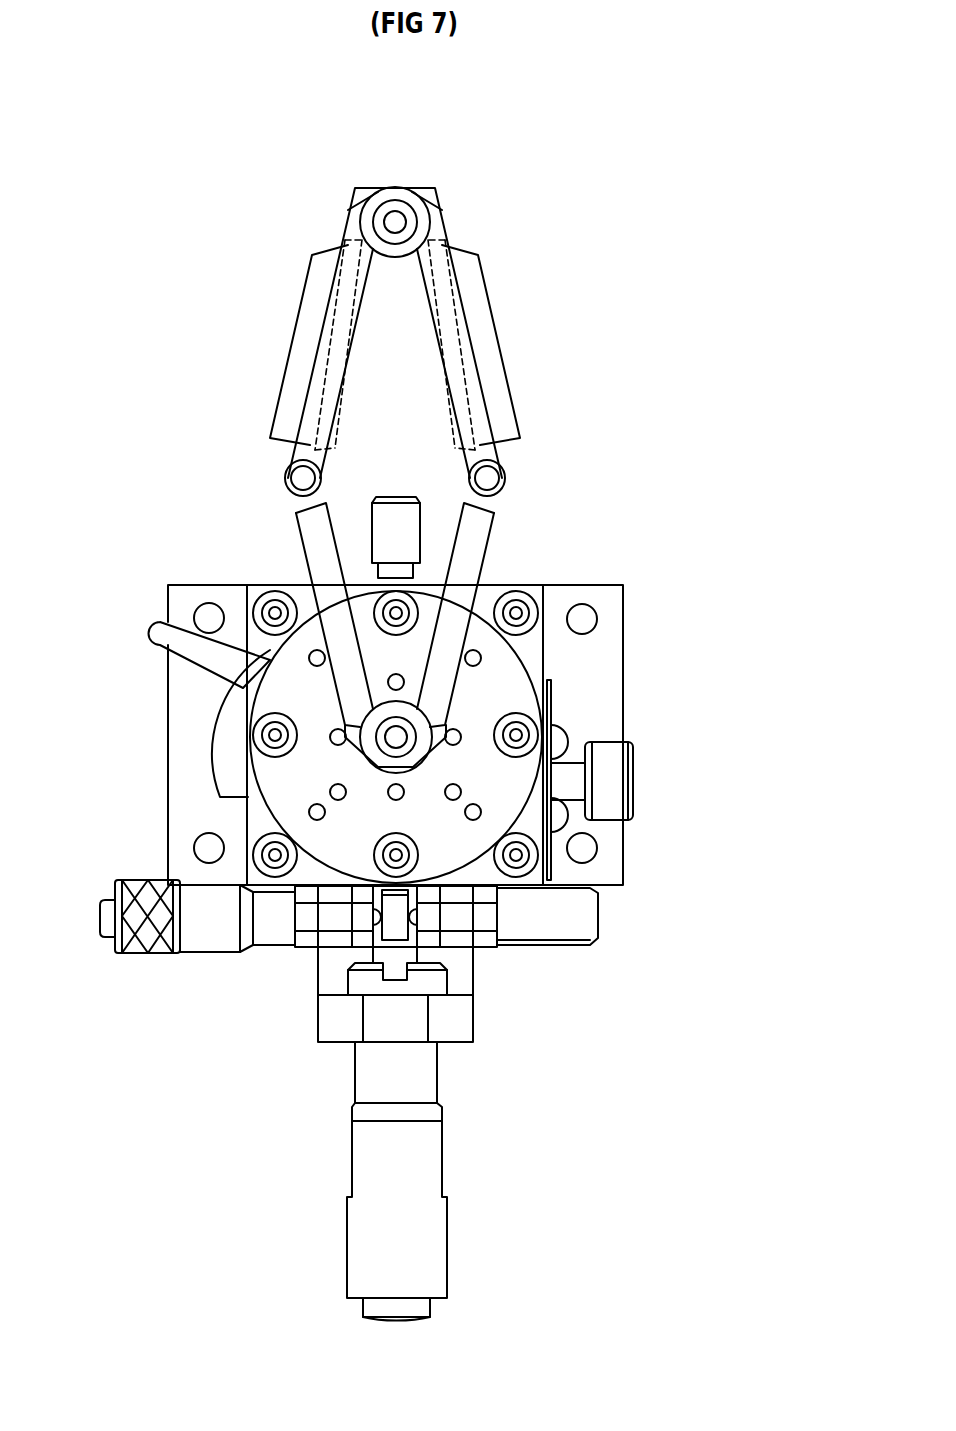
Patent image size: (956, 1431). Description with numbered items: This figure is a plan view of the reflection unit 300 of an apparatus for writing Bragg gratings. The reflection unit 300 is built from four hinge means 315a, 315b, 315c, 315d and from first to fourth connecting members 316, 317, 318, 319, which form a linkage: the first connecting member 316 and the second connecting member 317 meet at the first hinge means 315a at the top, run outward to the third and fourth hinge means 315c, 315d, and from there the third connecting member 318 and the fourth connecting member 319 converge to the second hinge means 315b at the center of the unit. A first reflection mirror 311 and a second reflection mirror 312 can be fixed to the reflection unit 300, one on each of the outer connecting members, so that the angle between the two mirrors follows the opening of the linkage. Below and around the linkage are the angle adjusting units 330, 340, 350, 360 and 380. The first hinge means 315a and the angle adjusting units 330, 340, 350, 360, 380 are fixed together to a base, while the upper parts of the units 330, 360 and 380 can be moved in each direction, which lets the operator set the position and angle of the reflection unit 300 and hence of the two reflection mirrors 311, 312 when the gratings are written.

The reflection unit 300 is at (688, 190).
The first reflection mirror 311 is at (297, 358).
The second reflection mirror 312 is at (490, 332).
The first hinge means 315a is at (395, 221).
The second hinge means 315b is at (392, 738).
The third hinge means 315c is at (303, 477).
The fourth hinge means 315d is at (487, 478).
The first connecting member 316 is at (335, 247).
The second connecting member 317 is at (442, 238).
The third connecting member 318 is at (317, 550).
The fourth connecting member 319 is at (473, 553).
The angle adjusting unit 330 is at (418, 1308).
The angle adjusting unit 340 is at (147, 890).
The angle adjusting unit 350 is at (397, 497).
The angle adjusting unit 360 is at (603, 753).
The angle adjusting unit 380 is at (467, 973).